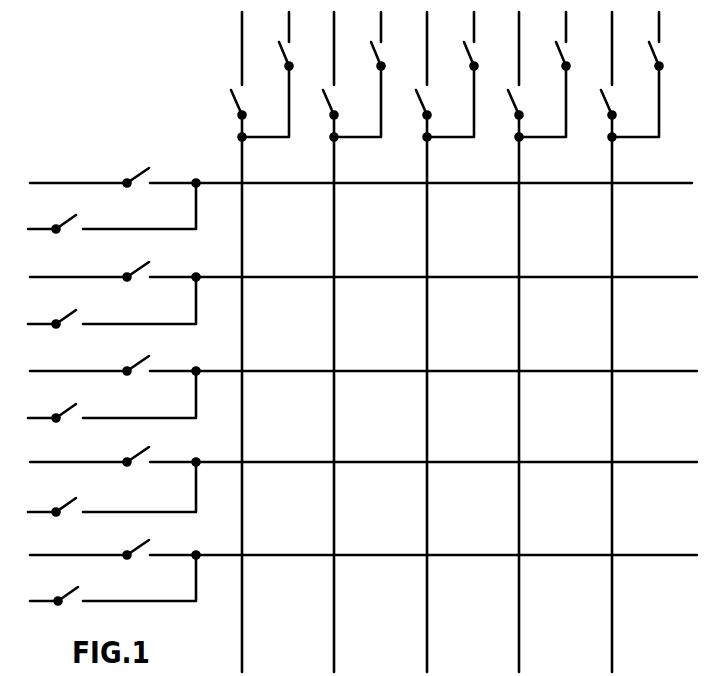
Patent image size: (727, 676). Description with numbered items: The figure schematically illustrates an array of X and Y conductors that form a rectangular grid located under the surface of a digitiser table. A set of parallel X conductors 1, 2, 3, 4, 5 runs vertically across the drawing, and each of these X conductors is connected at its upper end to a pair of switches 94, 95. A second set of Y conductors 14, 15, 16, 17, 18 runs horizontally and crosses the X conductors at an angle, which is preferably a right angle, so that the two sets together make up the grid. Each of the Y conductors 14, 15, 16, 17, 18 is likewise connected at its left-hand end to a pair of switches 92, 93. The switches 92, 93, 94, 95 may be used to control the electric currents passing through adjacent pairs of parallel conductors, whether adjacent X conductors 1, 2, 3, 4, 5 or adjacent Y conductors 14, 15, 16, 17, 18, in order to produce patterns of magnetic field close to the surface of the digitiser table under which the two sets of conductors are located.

The X conductor 1 is at (247, 253).
The X conductor 2 is at (339, 253).
The X conductor 3 is at (432, 253).
The X conductor 4 is at (524, 253).
The X conductor 5 is at (617, 253).
The Y conductor 14 is at (308, 184).
The Y conductor 15 is at (291, 278).
The Y conductor 16 is at (280, 372).
The Y conductor 17 is at (283, 463).
The Y conductor 18 is at (292, 556).
The switch 92 is at (53, 401).
The switch 93 is at (125, 344).
The switch 94 is at (436, 101).
The switch 95 is at (467, 76).